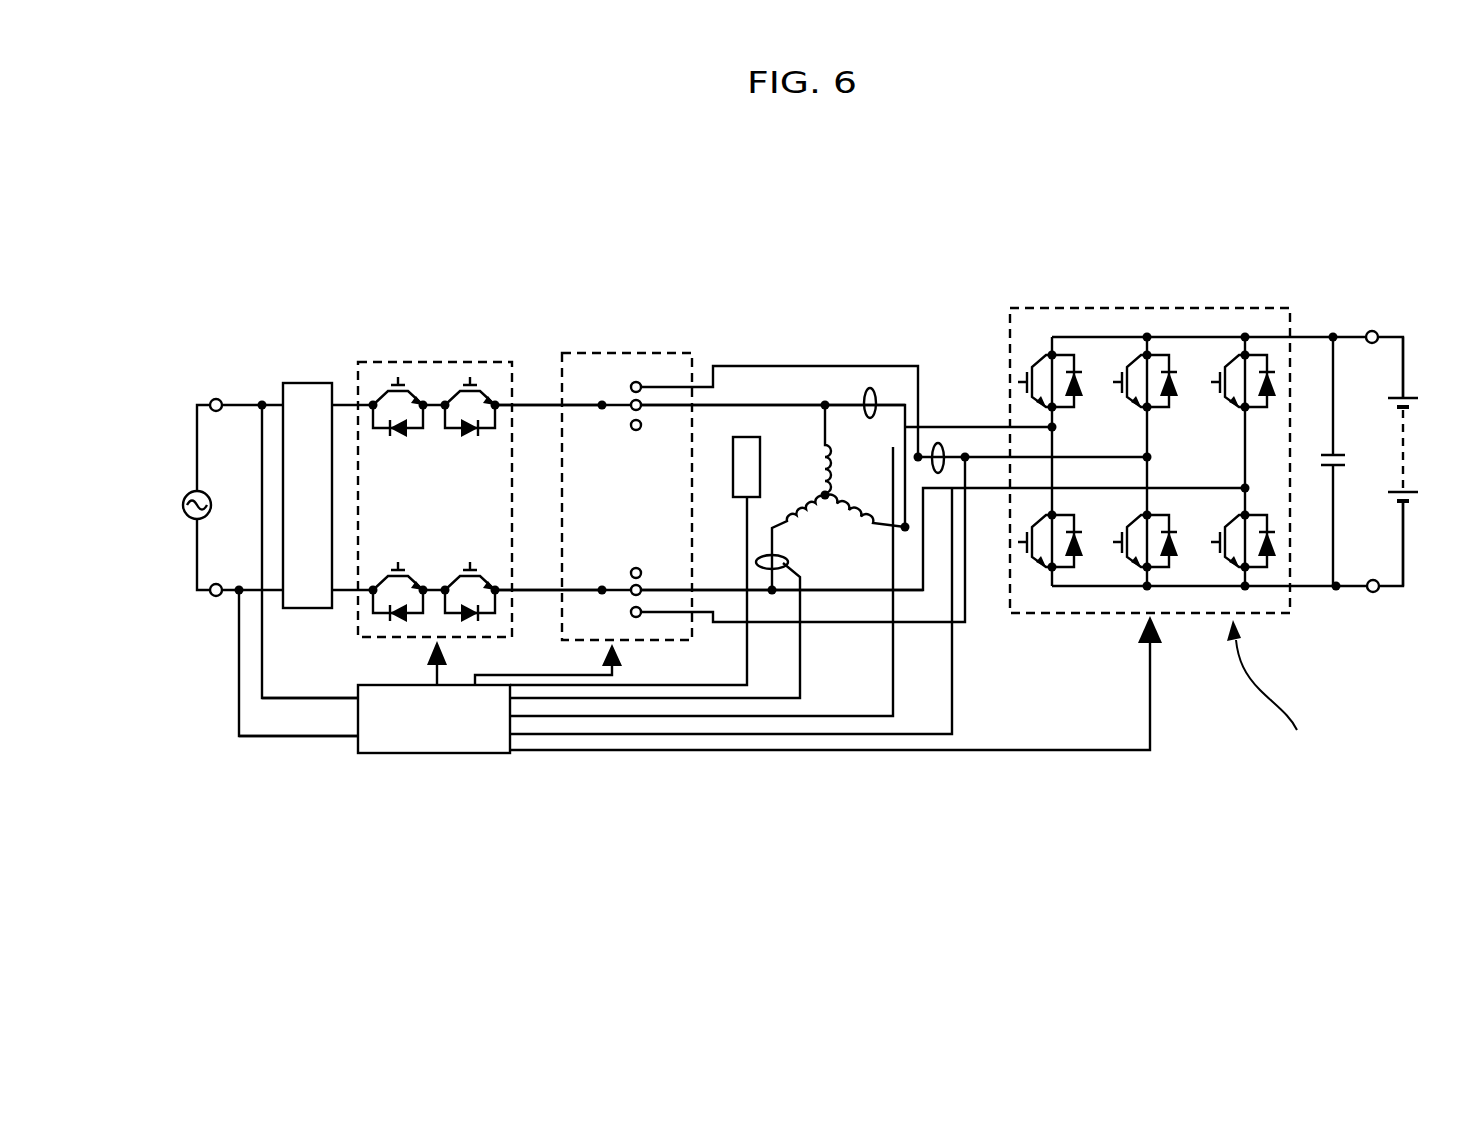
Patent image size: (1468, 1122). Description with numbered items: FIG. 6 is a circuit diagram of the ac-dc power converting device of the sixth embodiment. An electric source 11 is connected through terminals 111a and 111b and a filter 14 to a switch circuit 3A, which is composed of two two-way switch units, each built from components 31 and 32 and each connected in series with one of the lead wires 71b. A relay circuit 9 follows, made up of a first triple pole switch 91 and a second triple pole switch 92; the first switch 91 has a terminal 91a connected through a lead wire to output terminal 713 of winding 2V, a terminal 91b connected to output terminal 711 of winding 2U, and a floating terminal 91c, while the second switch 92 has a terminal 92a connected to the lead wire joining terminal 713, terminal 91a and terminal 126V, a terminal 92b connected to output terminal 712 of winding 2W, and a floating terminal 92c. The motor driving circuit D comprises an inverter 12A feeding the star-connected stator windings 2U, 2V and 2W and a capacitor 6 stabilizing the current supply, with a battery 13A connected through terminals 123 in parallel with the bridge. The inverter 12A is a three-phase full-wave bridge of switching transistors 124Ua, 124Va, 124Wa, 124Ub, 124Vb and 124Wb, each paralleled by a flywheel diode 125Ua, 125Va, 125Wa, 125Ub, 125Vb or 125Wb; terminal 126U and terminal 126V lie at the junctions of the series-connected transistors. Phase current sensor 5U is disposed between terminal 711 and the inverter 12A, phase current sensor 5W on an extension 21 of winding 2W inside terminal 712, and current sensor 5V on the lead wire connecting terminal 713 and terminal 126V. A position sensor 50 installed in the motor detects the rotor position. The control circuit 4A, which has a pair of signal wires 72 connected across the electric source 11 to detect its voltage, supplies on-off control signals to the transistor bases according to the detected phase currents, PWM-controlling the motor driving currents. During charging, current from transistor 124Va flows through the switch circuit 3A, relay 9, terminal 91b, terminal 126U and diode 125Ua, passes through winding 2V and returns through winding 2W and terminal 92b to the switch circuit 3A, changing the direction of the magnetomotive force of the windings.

The electric source 11 is at (193, 518).
The input terminal 111a is at (215, 398).
The input terminal 111b is at (212, 602).
The filter 14 is at (287, 378).
The switch circuit 3A is at (394, 408).
The switching element 31 is at (397, 390).
The diode 32 is at (400, 432).
The lead wires 71b is at (522, 400).
The relay circuit 9 is at (620, 478).
The first triple pole switch 91 is at (608, 402).
The terminal 91a is at (636, 382).
The terminal 91b is at (631, 408).
The floating terminal 91c is at (640, 428).
The second triple pole switch 92 is at (620, 588).
The terminal 92a is at (640, 617).
The terminal 92b is at (631, 592).
The floating terminal 92c is at (639, 569).
The position sensor 50 is at (746, 437).
The extension of stator winding 2W 21 is at (821, 544).
The stator winding 2U is at (813, 400).
The stator winding 2V is at (883, 661).
The stator winding 2W is at (793, 517).
The output terminal 711 is at (823, 403).
The output terminal 712 is at (773, 595).
The output terminal 713 is at (905, 527).
The phase current sensor 5U is at (893, 447).
The current sensor 5V is at (952, 487).
The phase current sensor 5W is at (778, 565).
The control circuit 4A is at (427, 757).
The signal wires 72 is at (268, 738).
The inverter 12A is at (1221, 514).
The switching transistor 124Ua is at (1020, 380).
The switching transistor 124Va is at (1122, 380).
The switching transistor 124Wa is at (1275, 372).
The switching transistor 124Ub is at (1035, 555).
The switching transistor 124Vb is at (1135, 545).
The switching transistor 124Wb is at (1228, 553).
The flywheel diode 125Ua is at (1075, 375).
The flywheel diode 125Va is at (1218, 375).
The flywheel diode 125Wa is at (1178, 378).
The flywheel diode 125Ub is at (1080, 565).
The flywheel diode 125Vb is at (1175, 565).
The flywheel diode 125Wb is at (1270, 562).
The terminal of inverter 126U is at (1057, 427).
The terminal of inverter 126V is at (1150, 456).
The motor driving circuit D is at (1272, 696).
The capacitor 6 is at (1343, 452).
The output terminal 123 is at (1373, 330).
The battery 13A is at (1405, 455).